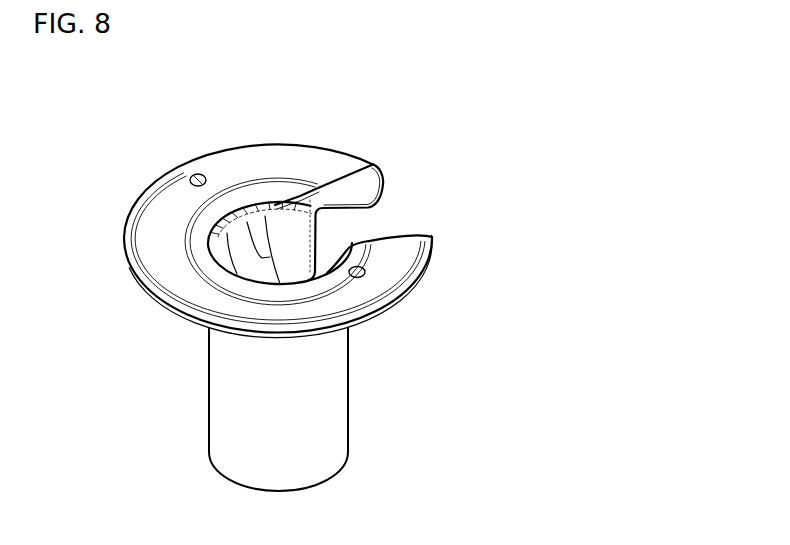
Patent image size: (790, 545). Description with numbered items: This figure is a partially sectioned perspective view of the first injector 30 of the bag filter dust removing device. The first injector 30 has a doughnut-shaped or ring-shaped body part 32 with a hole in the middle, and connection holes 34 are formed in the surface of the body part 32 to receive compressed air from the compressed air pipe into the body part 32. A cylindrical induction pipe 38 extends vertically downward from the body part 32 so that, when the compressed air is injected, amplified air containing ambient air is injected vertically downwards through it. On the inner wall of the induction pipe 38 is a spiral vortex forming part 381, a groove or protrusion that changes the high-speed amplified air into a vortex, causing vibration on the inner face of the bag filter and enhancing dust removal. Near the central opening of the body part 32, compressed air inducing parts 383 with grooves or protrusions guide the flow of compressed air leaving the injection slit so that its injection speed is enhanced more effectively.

The first injector 30 is at (246, 257).
The body part 32 is at (150, 257).
The connection hole 34 is at (191, 178).
The induction pipe 38 is at (340, 410).
The vortex forming part 381 is at (247, 222).
The compressed air inducing part 383 is at (310, 187).